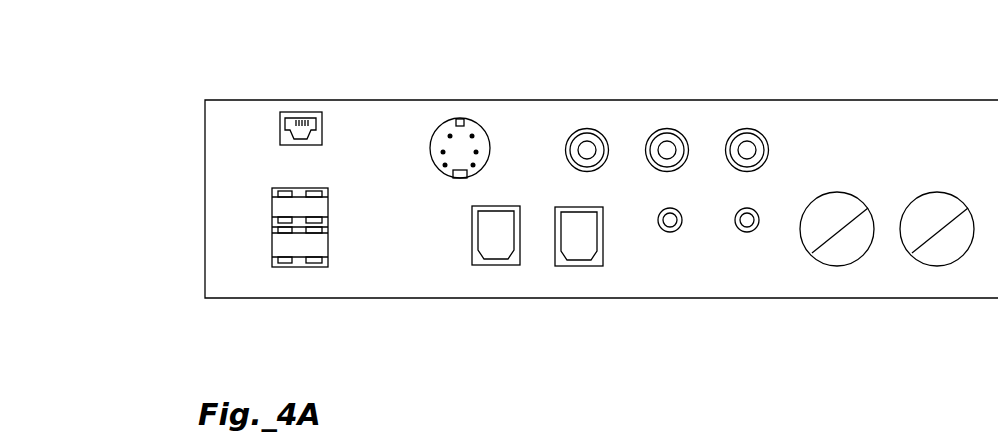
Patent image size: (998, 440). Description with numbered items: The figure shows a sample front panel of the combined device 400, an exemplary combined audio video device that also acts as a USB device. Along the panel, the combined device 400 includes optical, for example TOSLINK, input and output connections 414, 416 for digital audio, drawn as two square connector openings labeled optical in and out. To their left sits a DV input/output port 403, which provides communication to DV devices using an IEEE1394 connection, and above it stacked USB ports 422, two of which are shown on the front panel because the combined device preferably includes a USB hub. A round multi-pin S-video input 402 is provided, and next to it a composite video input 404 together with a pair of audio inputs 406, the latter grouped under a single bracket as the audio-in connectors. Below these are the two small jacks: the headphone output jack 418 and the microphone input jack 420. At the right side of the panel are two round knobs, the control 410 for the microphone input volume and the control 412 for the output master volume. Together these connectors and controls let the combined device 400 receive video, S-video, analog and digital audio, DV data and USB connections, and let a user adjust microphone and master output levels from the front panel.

The combined device 400 is at (205, 100).
The S-video inputs 402 is at (423, 133).
The DV input/output port 403 is at (280, 133).
The composite video input 404 is at (580, 130).
The audio inputs 406 is at (785, 118).
The microphone input volume control 410 is at (835, 266).
The output master volume control 412 is at (935, 266).
The optical input connection 414 is at (477, 265).
The optical output connection 416 is at (560, 266).
The headphone output jack 418 is at (667, 232).
The microphone input jack 420 is at (745, 232).
The USB ports 422 is at (300, 267).